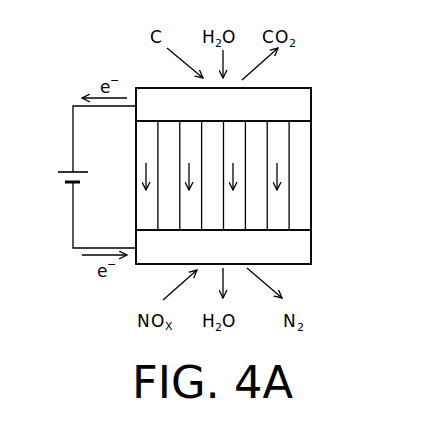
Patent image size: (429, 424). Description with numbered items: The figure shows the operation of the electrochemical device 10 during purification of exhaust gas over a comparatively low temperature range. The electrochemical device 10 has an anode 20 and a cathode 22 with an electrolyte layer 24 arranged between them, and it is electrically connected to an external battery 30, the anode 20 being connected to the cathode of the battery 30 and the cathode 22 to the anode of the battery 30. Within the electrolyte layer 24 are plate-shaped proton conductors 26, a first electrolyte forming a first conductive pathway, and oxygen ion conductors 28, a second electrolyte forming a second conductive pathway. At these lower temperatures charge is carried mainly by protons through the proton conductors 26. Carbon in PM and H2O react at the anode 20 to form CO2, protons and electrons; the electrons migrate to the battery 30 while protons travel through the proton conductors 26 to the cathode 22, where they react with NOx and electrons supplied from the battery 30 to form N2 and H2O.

The electrochemical device 10 is at (322, 68).
The anode 20 is at (297, 103).
The cathode 22 is at (297, 246).
The electrolyte layer 24 is at (318, 170).
The proton conductors 26 is at (147, 128).
The oxygen ion conductors 28 is at (168, 128).
The battery 30 is at (68, 170).